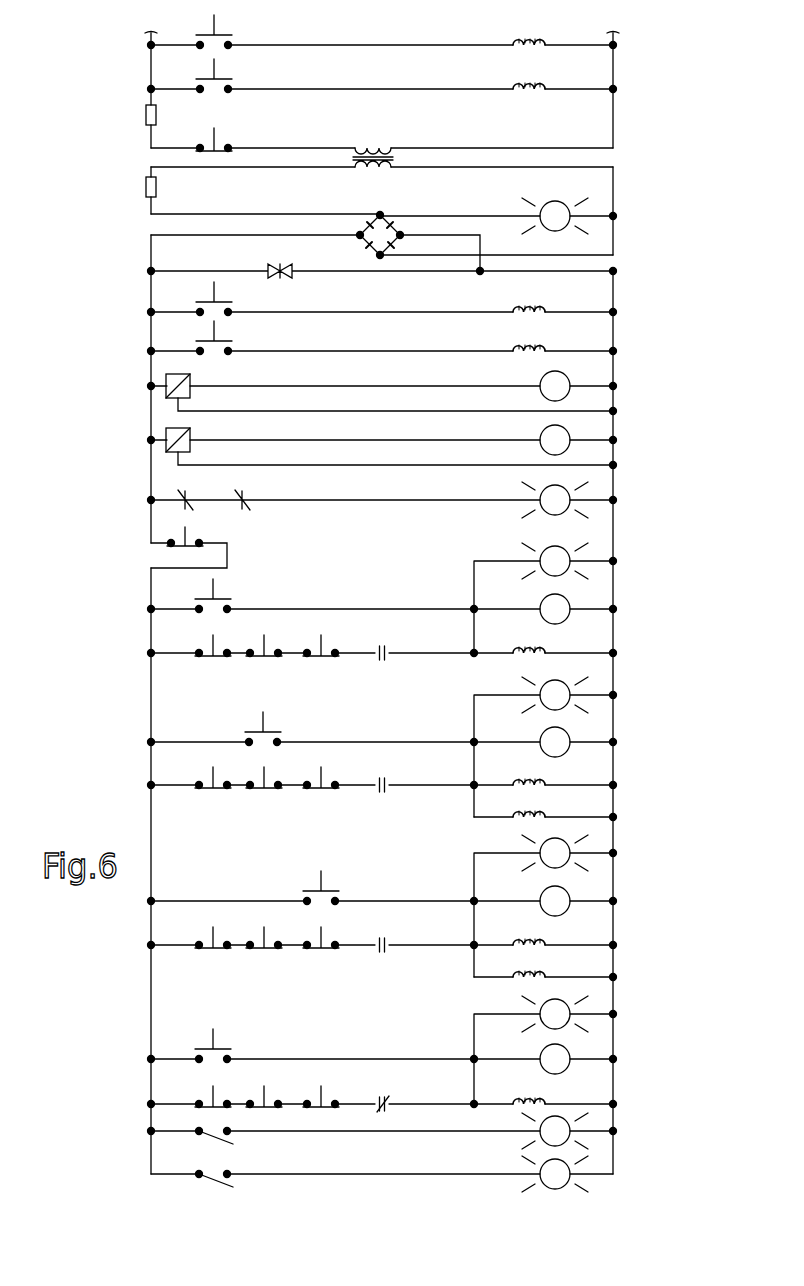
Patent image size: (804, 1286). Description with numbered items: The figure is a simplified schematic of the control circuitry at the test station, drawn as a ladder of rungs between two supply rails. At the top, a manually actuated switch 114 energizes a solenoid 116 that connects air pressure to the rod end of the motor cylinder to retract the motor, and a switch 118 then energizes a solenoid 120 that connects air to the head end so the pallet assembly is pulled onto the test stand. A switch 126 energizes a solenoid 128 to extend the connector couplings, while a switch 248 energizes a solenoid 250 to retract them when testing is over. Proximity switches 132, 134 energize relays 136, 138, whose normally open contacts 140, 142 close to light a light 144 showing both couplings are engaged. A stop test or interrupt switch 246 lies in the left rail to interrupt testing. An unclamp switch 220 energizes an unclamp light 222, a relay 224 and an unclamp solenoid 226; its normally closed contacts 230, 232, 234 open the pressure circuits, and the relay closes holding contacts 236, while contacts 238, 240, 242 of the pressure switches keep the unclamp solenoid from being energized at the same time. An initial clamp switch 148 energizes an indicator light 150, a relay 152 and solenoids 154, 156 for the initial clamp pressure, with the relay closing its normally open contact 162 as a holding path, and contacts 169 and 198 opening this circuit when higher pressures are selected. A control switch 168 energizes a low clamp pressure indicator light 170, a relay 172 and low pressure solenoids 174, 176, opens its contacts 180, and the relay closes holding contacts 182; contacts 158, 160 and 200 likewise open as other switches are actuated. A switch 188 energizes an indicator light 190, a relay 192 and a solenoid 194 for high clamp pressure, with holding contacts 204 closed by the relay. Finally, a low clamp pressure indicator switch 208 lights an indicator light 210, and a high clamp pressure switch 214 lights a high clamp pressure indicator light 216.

The switch 114 is at (228, 30).
The solenoid 116 is at (548, 37).
The switch 118 is at (224, 76).
The solenoid 120 is at (548, 84).
The switch 126 is at (226, 302).
The solenoid 128 is at (552, 304).
The switch 248 is at (226, 341).
The solenoid 250 is at (552, 344).
The proximity switch 132 is at (190, 378).
The proximity switch 134 is at (190, 435).
The relay 136 is at (560, 385).
The relay 138 is at (560, 440).
The normally open contact 140 is at (175, 497).
The normally open contact 142 is at (248, 506).
The light 144 is at (555, 502).
The stop test or interrupt switch 246 is at (183, 553).
The unclamp switch 220 is at (228, 596).
The unclamp light 222 is at (555, 560).
The relay 224 is at (555, 609).
The unclamp solenoid 226 is at (548, 650).
The normally closed contacts 238 is at (213, 656).
The normally closed contacts 240 is at (264, 656).
The contacts 242 is at (321, 656).
The normally open holding contacts 236 is at (385, 658).
The indicator light 150 is at (558, 694).
The initial clamp switch 148 is at (275, 728).
The relay 152 is at (558, 742).
The solenoid 154 is at (552, 786).
The solenoid 156 is at (552, 815).
The normally closed contacts 230 is at (213, 790).
The normally closed contact 169 is at (264, 790).
The normally closed contacts 198 is at (321, 790).
The normally open contact 162 is at (385, 792).
The low clamp pressure indicator light 170 is at (560, 852).
The control switch 168 is at (320, 890).
The relay 172 is at (560, 900).
The low pressure solenoid 174 is at (548, 945).
The low pressure solenoid 176 is at (548, 978).
The normally closed contacts 232 is at (213, 950).
The normally closed contacts 158 is at (264, 950).
The normally closed contacts 200 is at (321, 950).
The normally open relay contacts 182 is at (385, 950).
The indicator light 190 is at (560, 1012).
The switch 188 is at (222, 1044).
The relay 192 is at (560, 1058).
The solenoid 194 is at (550, 1100).
The normally closed contacts 234 is at (210, 1092).
The normally closed contacts 160 is at (274, 1100).
The normally closed contacts 180 is at (330, 1100).
The holding contacts 204 is at (385, 1094).
The low clamp pressure indicator switch 208 is at (233, 1144).
The indicator light 210 is at (565, 1140).
The high clamp pressure switch 214 is at (234, 1186).
The high clamp pressure indicator light 216 is at (545, 1170).